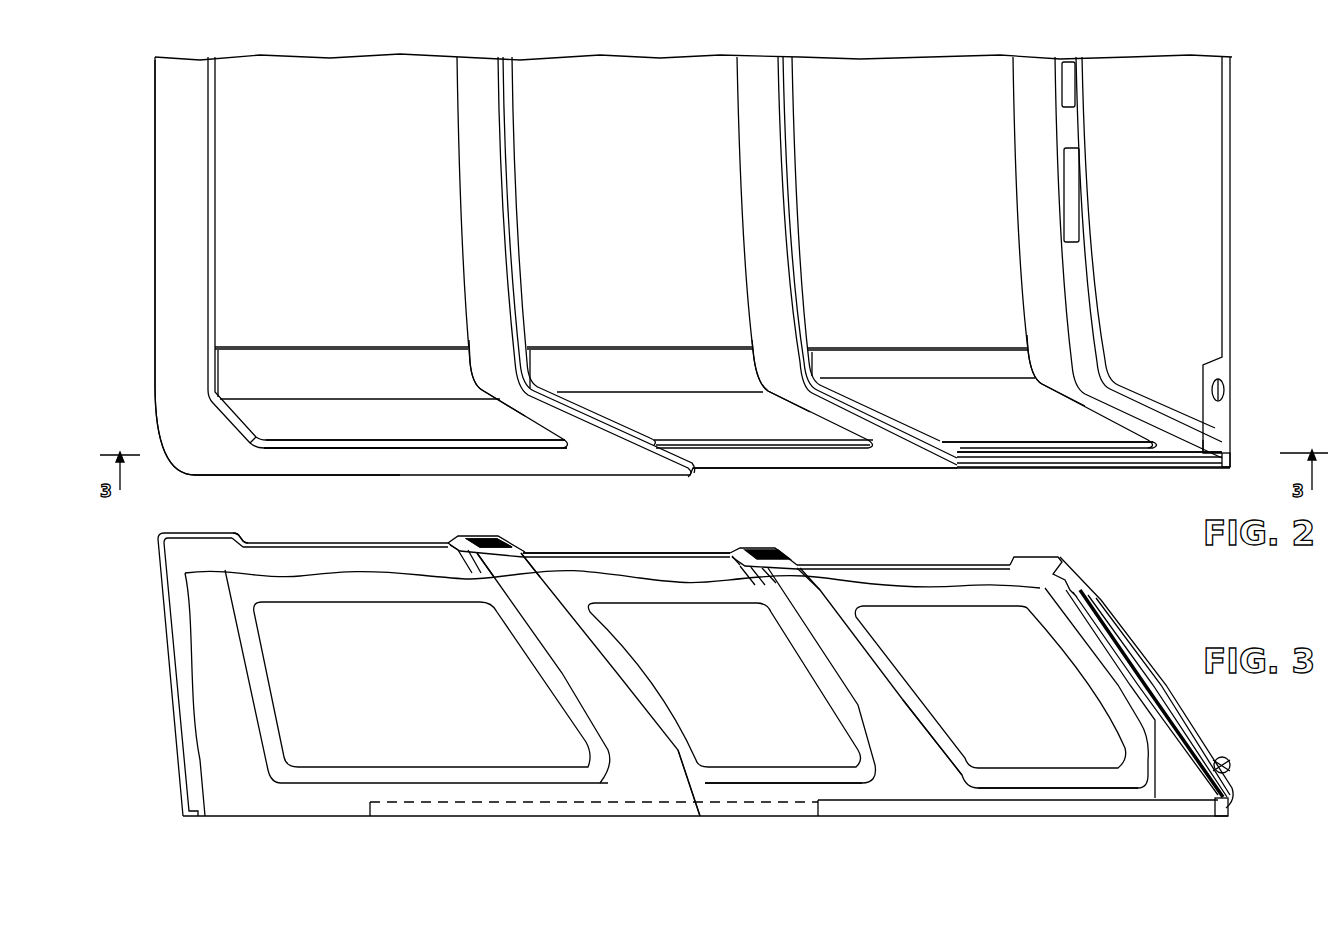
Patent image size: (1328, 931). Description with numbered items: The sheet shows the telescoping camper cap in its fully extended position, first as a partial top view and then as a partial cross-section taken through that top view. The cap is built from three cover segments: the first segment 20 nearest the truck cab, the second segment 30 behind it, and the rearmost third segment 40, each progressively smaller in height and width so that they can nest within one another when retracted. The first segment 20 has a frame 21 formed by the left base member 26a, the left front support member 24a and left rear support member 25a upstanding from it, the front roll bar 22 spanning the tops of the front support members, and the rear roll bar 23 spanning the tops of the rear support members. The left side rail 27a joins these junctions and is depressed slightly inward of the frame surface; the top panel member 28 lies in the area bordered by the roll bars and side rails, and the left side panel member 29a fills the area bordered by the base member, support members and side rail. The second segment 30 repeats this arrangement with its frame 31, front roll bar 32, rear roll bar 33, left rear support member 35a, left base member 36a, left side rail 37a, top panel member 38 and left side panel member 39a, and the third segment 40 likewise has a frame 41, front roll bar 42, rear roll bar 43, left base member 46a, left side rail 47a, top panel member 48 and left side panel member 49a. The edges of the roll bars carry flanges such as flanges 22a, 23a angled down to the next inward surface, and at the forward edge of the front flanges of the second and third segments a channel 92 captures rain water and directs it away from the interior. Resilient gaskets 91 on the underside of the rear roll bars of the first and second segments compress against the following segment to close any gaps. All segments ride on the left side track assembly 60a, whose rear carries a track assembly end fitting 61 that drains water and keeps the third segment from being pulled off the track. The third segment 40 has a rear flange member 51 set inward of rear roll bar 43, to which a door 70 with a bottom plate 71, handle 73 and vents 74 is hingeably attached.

In FIG. 2, the first segment 20 is at (248, 70).
In FIG. 3, the first segment 20 is at (340, 536).
In FIG. 2, the frame 21 is at (487, 328).
In FIG. 2, the front roll bar 22 is at (197, 202).
In FIG. 3, the front roll bar 22 is at (180, 532).
In FIG. 3, the flange 22a is at (243, 540).
In FIG. 2, the rear roll bar 23 is at (470, 150).
In FIG. 3, the rear roll bar 23 is at (488, 535).
In FIG. 3, the flange 23a is at (455, 543).
In FIG. 2, the left front support member 24a is at (165, 430).
In FIG. 3, the left front support member 24a is at (230, 778).
In FIG. 3, the left rear support member 25a is at (640, 755).
In FIG. 2, the left base member 26a is at (275, 460).
In FIG. 3, the left base member 26a is at (352, 800).
In FIG. 2, the left side rail 27a is at (320, 368).
In FIG. 2, the top panel member 28 is at (325, 68).
In FIG. 3, the top panel member 28 is at (374, 548).
In FIG. 2, the left side panel member 29a is at (383, 430).
In FIG. 3, the left side panel member 29a is at (500, 752).
In FIG. 2, the second segment 30 is at (560, 68).
In FIG. 3, the second segment 30 is at (665, 548).
In FIG. 2, the frame 31 is at (758, 330).
In FIG. 3, the front roll bar 32 is at (530, 553).
In FIG. 2, the rear roll bar 33 is at (745, 172).
In FIG. 3, the rear roll bar 33 is at (752, 548).
In FIG. 3, the left rear support member 35a is at (905, 735).
In FIG. 2, the left base member 36a is at (700, 462).
In FIG. 3, the left base member 36a is at (745, 795).
In FIG. 2, the left side rail 37a is at (630, 363).
In FIG. 2, the top panel member 38 is at (640, 70).
In FIG. 3, the top panel member 38 is at (592, 552).
In FIG. 2, the left side panel member 39a is at (760, 430).
In FIG. 3, the left side panel member 39a is at (820, 748).
In FIG. 2, the third segment 40 is at (858, 70).
In FIG. 3, the third segment 40 is at (910, 560).
In FIG. 2, the frame 41 is at (1042, 338).
In FIG. 3, the front roll bar 42 is at (798, 566).
In FIG. 2, the rear roll bar 43 is at (1037, 158).
In FIG. 3, the rear roll bar 43 is at (1027, 556).
In FIG. 2, the left base member 46a is at (1003, 445).
In FIG. 3, the left base member 46a is at (990, 795).
In FIG. 2, the left side rail 47a is at (886, 368).
In FIG. 2, the top panel member 48 is at (953, 68).
In FIG. 3, the top panel member 48 is at (936, 565).
In FIG. 2, the left side panel member 49a is at (1065, 420).
In FIG. 3, the left side panel member 49a is at (1110, 750).
In FIG. 2, the rear flange member 51 is at (1227, 430).
In FIG. 2, the left side track assembly 60a is at (1155, 468).
In FIG. 3, the left side track assembly 60a is at (1050, 806).
In FIG. 2, the track assembly end fitting 61 is at (1235, 460).
In FIG. 3, the track assembly end fitting 61 is at (1230, 817).
In FIG. 2, the door 70 is at (1232, 212).
In FIG. 2, the bottom plate 71 is at (1232, 250).
In FIG. 2, the handle 73 is at (1225, 390).
In FIG. 3, the handle 73 is at (1231, 762).
In FIG. 2, the vents 74 is at (1070, 88).
In FIG. 3, the gasket 91 is at (508, 540).
In FIG. 3, the channel 92 is at (449, 545).